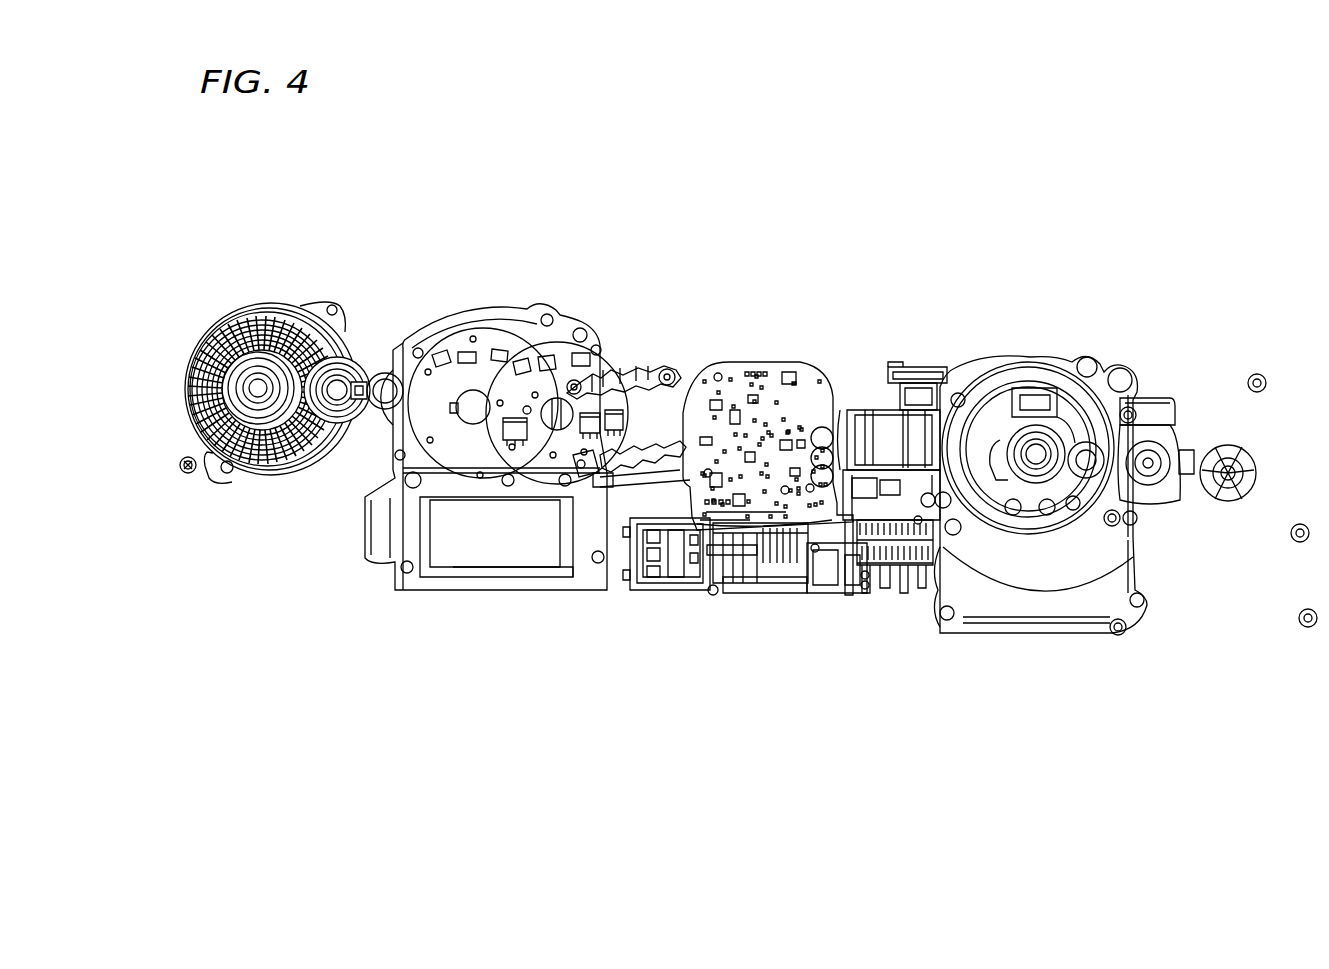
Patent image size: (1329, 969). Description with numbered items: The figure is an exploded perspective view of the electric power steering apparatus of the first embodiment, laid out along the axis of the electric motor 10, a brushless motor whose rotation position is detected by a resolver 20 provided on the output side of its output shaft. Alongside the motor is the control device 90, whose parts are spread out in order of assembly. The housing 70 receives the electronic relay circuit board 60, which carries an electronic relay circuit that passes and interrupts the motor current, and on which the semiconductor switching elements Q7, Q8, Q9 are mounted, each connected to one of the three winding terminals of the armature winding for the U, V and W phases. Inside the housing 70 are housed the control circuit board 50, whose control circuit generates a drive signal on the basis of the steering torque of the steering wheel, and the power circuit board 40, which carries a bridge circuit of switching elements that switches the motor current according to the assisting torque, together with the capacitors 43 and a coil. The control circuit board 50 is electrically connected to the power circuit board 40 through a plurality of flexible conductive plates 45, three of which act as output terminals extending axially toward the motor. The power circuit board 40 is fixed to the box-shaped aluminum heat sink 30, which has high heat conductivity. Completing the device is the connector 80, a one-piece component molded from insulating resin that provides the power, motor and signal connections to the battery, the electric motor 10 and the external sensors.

The control device 90 is at (722, 201).
The electric motor 10 is at (286, 316).
The housing 70 is at (490, 320).
The electronic relay circuit board 60 is at (606, 358).
The control circuit board 50 is at (775, 370).
The power circuit board 40 is at (921, 372).
The capacitors 43 is at (930, 405).
The flexible conductive plates 45 is at (912, 553).
The heat sink 30 is at (1038, 372).
The resolver 20 is at (1162, 405).
The connector 80 is at (705, 594).
The semiconductor switching element Q7 is at (613, 432).
The semiconductor switching element Q8 is at (585, 428).
The semiconductor switching element Q9 is at (515, 432).